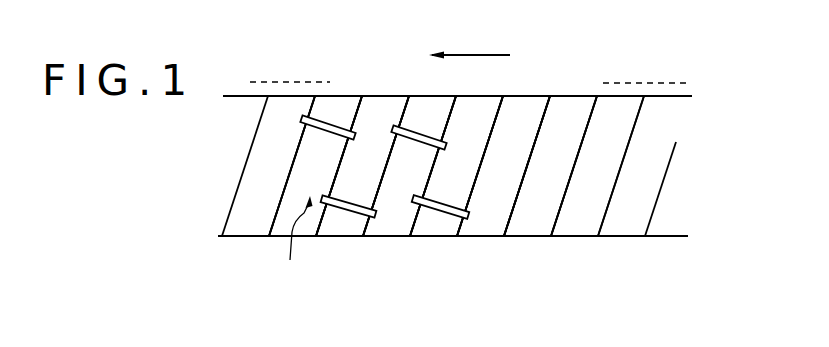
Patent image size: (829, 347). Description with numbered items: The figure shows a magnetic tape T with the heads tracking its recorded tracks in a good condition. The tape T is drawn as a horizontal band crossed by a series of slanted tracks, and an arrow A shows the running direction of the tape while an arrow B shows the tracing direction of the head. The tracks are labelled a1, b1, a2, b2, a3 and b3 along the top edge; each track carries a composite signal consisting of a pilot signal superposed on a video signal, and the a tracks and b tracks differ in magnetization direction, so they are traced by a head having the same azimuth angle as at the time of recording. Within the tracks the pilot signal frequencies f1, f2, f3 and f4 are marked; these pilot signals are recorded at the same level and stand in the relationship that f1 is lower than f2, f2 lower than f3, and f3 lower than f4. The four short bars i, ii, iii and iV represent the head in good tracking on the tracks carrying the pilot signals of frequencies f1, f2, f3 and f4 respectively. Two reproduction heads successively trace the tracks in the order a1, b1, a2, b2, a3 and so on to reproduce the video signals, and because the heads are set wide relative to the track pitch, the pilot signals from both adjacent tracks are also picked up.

The tape T is at (238, 107).
The arrow A is at (462, 52).
The arrow B is at (297, 242).
The head tracking state i is at (328, 118).
The head tracking state ii is at (356, 218).
The head tracking state iii is at (420, 123).
The head tracking state iv iV is at (445, 214).
The track a1 is at (342, 110).
The track b1 is at (377, 110).
The track a2 is at (435, 113).
The track b2 is at (475, 110).
The track a3 is at (523, 110).
The track b3 is at (568, 110).
The pilot signal frequency f1 is at (409, 166).
The pilot signal frequency f2 is at (456, 166).
The pilot signal frequency f3 is at (449, 166).
The pilot signal frequency f4 is at (503, 166).